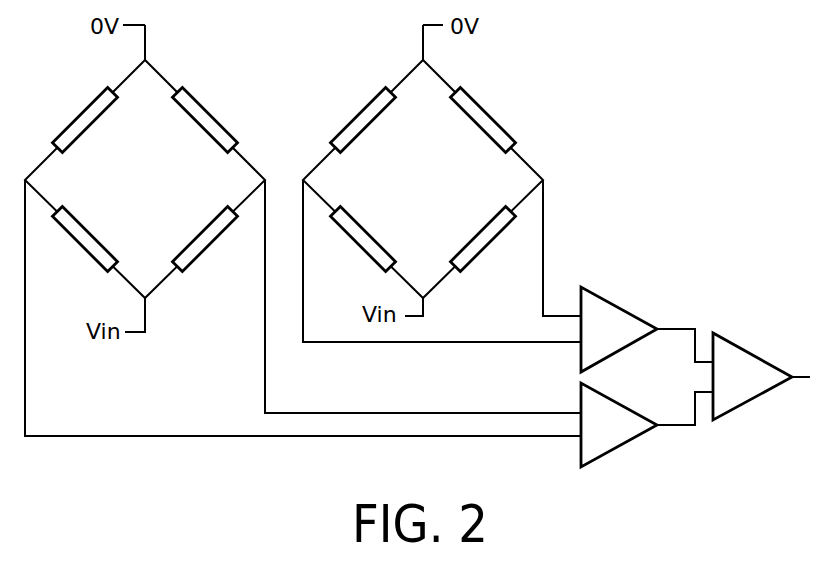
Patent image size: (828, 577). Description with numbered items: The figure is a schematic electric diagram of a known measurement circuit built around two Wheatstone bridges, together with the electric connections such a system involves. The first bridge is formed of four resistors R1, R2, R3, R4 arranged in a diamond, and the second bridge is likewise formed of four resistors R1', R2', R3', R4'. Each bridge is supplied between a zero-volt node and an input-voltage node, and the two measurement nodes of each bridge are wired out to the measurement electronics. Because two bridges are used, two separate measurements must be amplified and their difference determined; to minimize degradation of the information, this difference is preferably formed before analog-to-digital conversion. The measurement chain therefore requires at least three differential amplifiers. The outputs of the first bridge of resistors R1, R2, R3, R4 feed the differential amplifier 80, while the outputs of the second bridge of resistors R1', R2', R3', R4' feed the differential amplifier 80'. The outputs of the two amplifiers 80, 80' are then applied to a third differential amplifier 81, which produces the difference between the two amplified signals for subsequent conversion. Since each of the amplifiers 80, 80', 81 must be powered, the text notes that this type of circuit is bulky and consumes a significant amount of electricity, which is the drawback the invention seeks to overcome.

The resistor R1 is at (229, 116).
The resistor R2 is at (211, 258).
The resistor R3 is at (75, 256).
The resistor R4 is at (65, 110).
The resistor R1' is at (506, 109).
The resistor R2' is at (495, 258).
The resistor R3' is at (351, 258).
The resistor R4' is at (353, 100).
The differential amplifier 80 is at (623, 445).
The differential amplifier 80' is at (626, 307).
The differential amplifier 81 is at (748, 383).